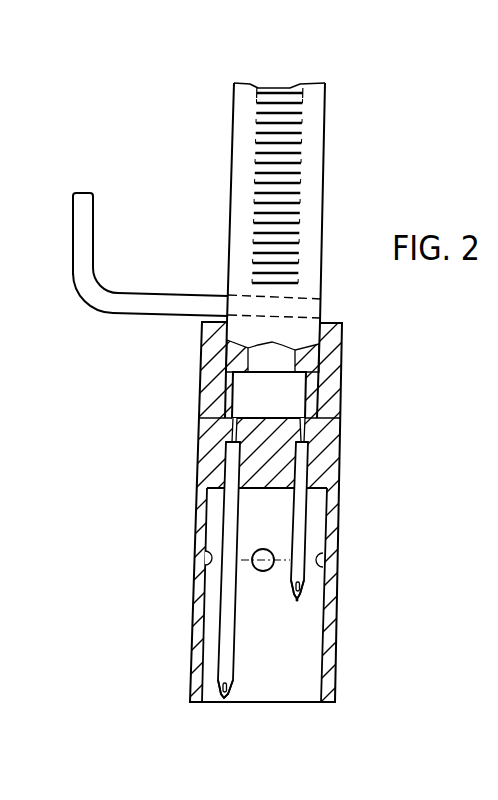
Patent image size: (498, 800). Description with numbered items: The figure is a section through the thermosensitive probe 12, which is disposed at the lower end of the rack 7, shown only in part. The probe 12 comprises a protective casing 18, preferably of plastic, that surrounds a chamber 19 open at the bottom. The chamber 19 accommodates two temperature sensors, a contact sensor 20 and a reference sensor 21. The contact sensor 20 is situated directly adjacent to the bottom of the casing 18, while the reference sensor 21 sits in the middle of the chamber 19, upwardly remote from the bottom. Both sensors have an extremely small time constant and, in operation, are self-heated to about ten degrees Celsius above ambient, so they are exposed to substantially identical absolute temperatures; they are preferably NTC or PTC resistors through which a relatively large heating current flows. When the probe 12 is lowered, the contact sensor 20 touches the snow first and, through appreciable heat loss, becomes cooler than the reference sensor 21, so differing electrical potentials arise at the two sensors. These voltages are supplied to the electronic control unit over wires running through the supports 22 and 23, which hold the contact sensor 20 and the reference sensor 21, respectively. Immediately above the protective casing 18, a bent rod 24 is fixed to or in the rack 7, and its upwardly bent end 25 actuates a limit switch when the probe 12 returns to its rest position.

The rack 7 is at (292, 131).
The probe 12 is at (340, 452).
The protective casing 18 is at (207, 443).
The chamber 19 is at (300, 652).
The contact sensor 20 is at (227, 694).
The reference sensor 21 is at (298, 601).
The support 22 is at (230, 522).
The support 23 is at (298, 519).
The bent rod 24 is at (115, 316).
The upwardly bent end 25 is at (82, 235).